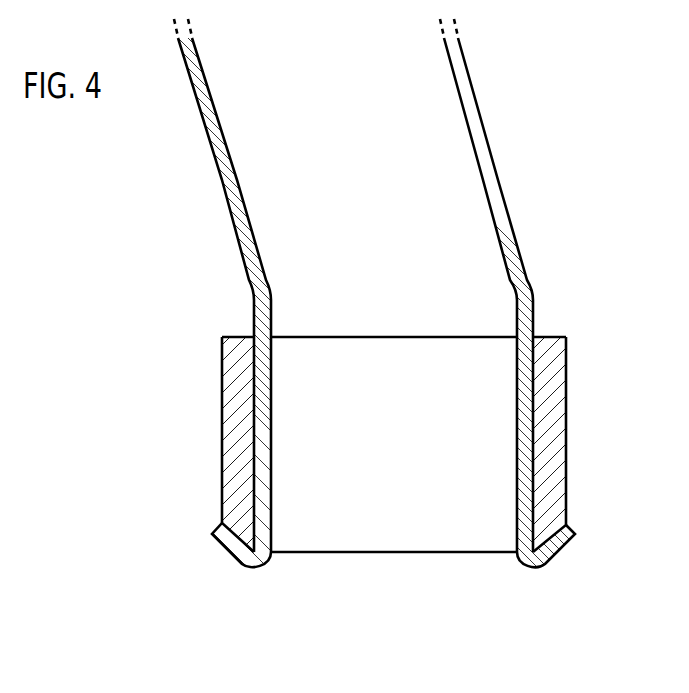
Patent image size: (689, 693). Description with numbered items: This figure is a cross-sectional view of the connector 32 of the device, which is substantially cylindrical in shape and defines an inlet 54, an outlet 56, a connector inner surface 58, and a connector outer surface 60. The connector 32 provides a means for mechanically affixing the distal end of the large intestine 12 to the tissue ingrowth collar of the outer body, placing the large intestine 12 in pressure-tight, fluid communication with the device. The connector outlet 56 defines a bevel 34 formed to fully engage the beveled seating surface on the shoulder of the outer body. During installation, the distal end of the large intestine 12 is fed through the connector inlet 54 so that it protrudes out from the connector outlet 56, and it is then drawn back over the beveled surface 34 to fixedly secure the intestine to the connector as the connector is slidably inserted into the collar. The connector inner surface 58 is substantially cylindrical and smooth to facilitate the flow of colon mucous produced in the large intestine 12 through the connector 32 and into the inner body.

The large intestine 12 is at (492, 145).
The connector 32 is at (548, 397).
The bevel 34 is at (557, 517).
The inlet 54 is at (390, 345).
The outlet 56 is at (398, 540).
The connector inner surface 58 is at (262, 437).
The connector outer surface 60 is at (222, 447).